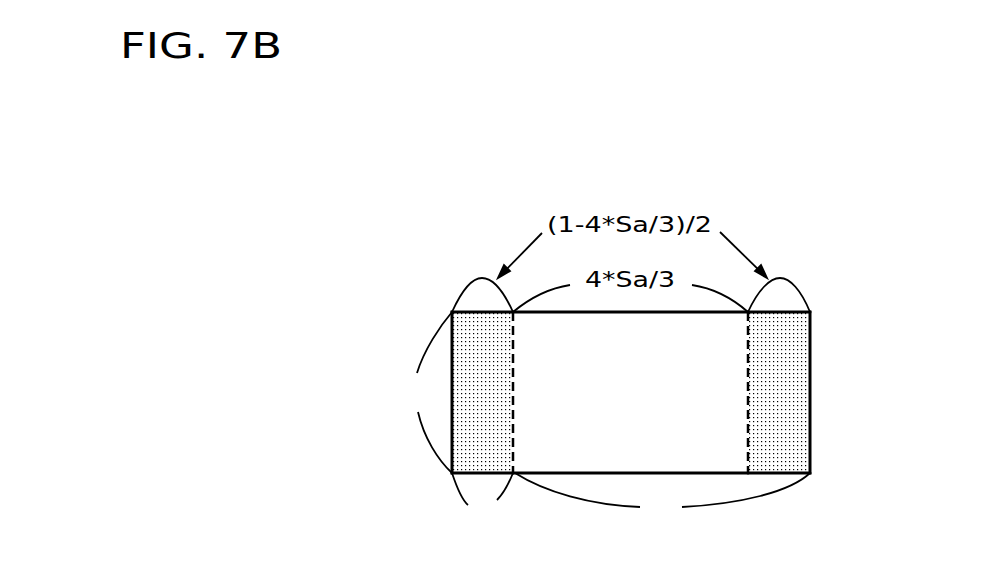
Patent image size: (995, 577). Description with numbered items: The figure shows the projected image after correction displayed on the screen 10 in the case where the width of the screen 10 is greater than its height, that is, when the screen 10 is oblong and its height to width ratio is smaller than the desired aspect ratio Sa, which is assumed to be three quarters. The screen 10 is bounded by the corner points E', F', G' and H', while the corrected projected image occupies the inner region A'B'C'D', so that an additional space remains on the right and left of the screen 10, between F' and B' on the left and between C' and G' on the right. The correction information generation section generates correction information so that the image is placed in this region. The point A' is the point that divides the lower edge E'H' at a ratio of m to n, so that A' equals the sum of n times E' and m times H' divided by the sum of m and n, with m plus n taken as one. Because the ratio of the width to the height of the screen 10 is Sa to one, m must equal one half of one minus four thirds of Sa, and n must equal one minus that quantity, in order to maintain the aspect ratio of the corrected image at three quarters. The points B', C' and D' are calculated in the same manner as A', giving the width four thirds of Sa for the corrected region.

The screen 10 is at (810, 345).
The desired aspect ratio Sa is at (427, 392).
The division ratio component m is at (482, 495).
The division ratio component n is at (662, 496).
The point A' A is at (525, 461).
The point B' B is at (526, 325).
The point C' C is at (733, 325).
The point D' D is at (732, 461).
The point E' E is at (465, 461).
The point F' F is at (464, 325).
The point G' G is at (794, 325).
The point H' H is at (794, 461).